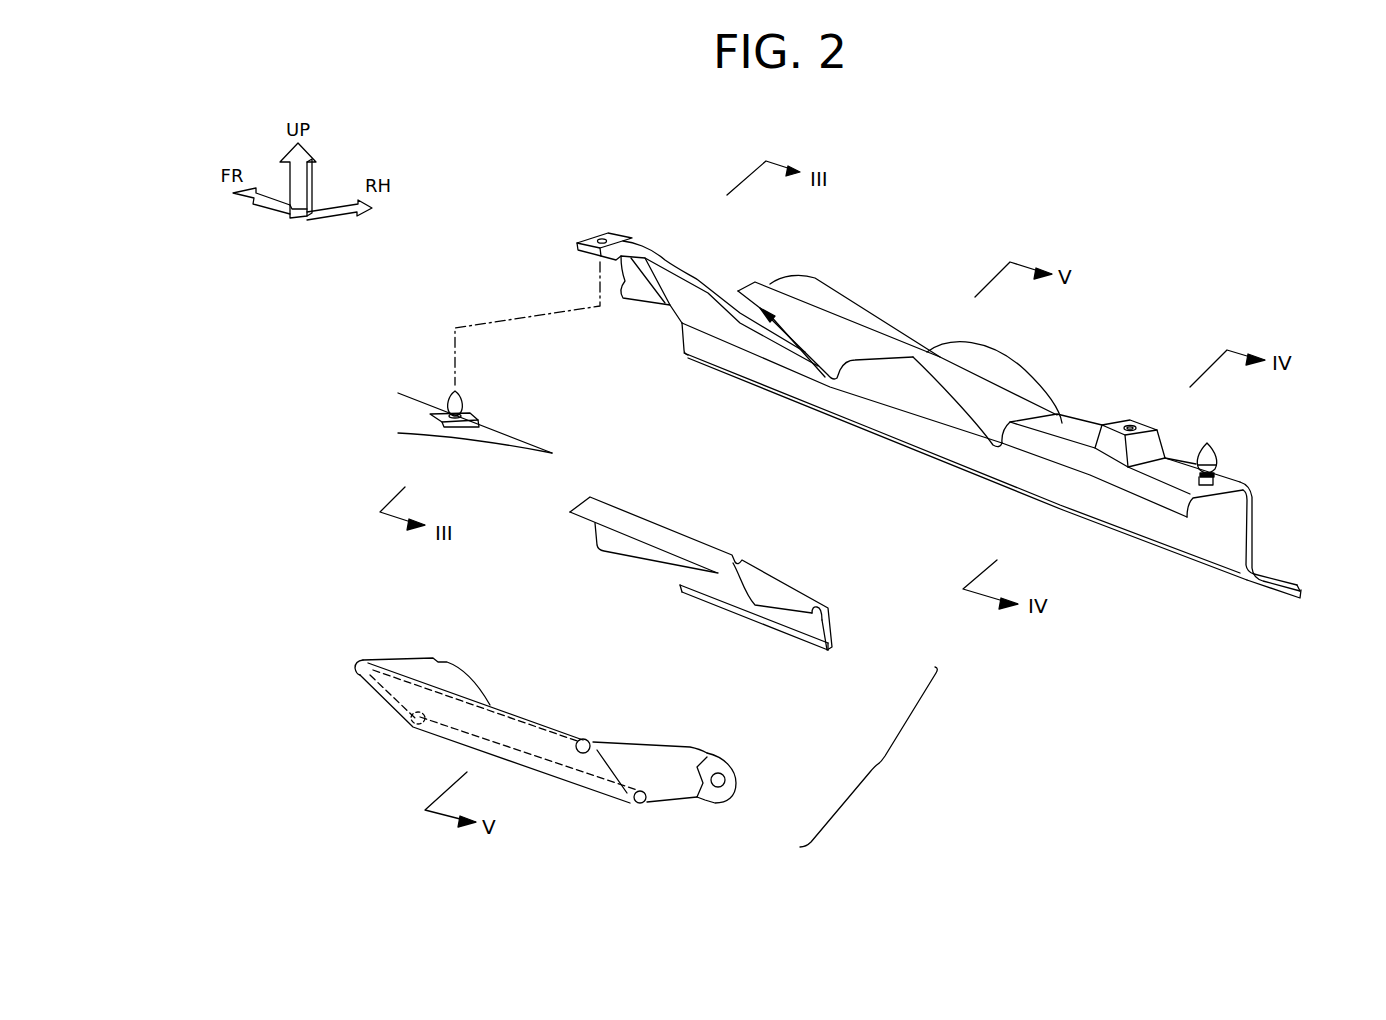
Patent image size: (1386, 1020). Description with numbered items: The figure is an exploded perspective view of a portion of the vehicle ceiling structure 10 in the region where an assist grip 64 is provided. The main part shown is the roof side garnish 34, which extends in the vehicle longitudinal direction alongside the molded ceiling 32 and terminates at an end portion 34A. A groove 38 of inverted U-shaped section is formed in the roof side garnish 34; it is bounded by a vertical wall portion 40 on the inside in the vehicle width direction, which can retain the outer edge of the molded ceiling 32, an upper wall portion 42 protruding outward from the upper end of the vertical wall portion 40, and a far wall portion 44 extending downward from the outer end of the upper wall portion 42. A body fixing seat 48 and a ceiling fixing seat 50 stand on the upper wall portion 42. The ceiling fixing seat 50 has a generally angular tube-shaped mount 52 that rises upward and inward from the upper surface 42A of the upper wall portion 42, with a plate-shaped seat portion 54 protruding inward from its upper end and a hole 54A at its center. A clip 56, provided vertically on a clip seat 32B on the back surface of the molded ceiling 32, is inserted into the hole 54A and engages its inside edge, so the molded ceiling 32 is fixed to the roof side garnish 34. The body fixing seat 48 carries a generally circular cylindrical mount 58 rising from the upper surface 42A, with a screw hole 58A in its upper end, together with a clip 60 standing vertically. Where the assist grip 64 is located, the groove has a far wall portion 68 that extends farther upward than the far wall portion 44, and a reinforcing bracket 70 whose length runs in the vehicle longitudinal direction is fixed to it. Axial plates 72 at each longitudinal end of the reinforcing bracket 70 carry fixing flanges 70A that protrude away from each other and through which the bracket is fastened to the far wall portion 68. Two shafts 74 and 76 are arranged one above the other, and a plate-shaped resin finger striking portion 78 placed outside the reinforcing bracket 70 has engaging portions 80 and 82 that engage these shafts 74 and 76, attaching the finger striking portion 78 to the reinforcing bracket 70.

The vehicle ceiling structure 10 is at (1198, 717).
The molded ceiling 32 is at (482, 428).
The clip seat 32B is at (468, 410).
The roof side garnish 34 is at (1007, 440).
The end portion of bracket 34A is at (1299, 592).
The groove 38 is at (1197, 575).
The vertical wall portion 40 is at (1140, 494).
The upper wall portion 42 is at (1063, 428).
The upper surface 42A is at (723, 295).
The far wall portion 44 is at (1254, 533).
The body fixing seat 48 is at (1170, 448).
The ceiling fixing seat 50 is at (653, 272).
The mount 52 is at (652, 240).
The seat portion 54 is at (560, 224).
The hole 54A is at (577, 243).
The clip 56 is at (460, 395).
The mount 58 is at (1147, 430).
The hole 58A is at (1110, 428).
The clip 60 is at (1216, 460).
The assist grip 64 is at (884, 757).
The far wall portion 68 is at (900, 318).
The reinforcing bracket 70 is at (585, 734).
The fixing flange 70A is at (433, 656).
The axial plate 72 is at (467, 685).
The shaft 74 is at (587, 739).
The shaft 76 is at (638, 806).
The finger striking portion 78 is at (709, 585).
The engaging portion 80 is at (740, 568).
The engaging portion 82 is at (812, 617).